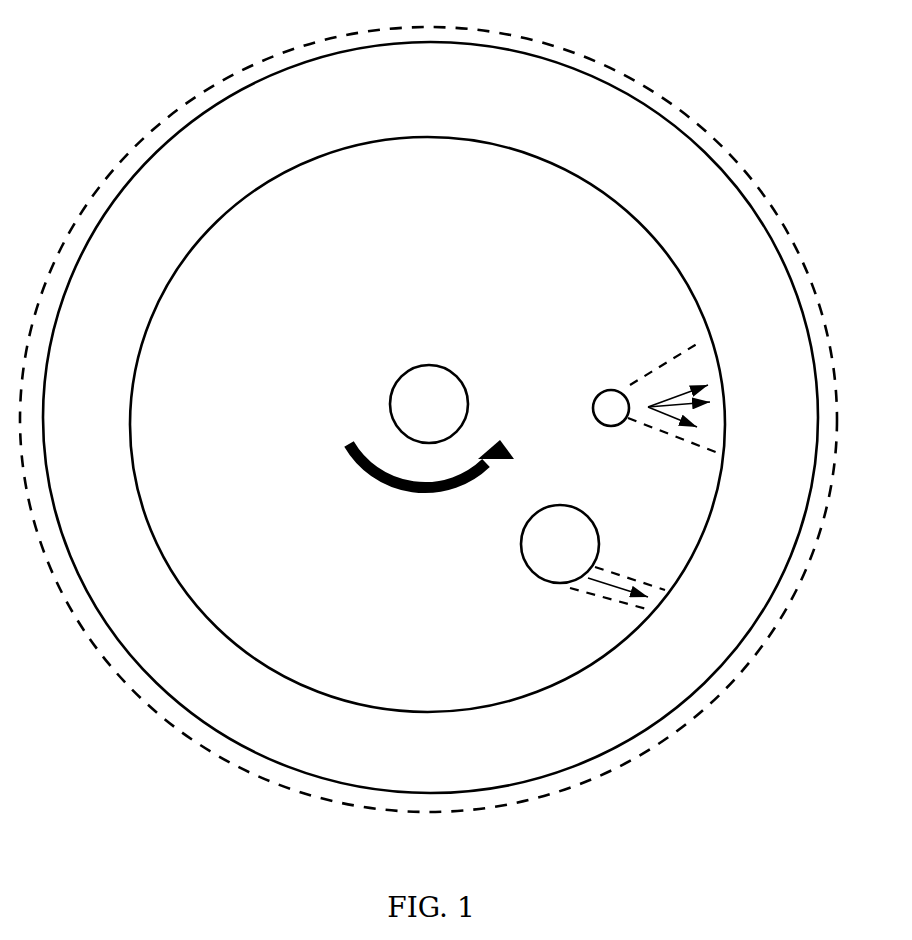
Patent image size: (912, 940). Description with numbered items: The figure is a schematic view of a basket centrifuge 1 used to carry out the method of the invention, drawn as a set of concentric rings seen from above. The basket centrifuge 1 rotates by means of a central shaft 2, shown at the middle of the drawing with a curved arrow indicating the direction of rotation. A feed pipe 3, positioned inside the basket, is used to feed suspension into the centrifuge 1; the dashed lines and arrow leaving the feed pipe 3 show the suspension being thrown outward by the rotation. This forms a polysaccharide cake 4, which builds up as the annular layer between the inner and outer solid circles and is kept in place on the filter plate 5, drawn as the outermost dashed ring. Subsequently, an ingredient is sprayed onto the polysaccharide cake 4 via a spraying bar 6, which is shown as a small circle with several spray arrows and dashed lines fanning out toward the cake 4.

The basket centrifuge 1 is at (383, 376).
The central shaft 2 is at (431, 426).
The feed pipe 3 is at (593, 557).
The polysaccharide cake 4 is at (430, 417).
The filter plate 5 is at (428, 419).
The spraying bar 6 is at (655, 397).